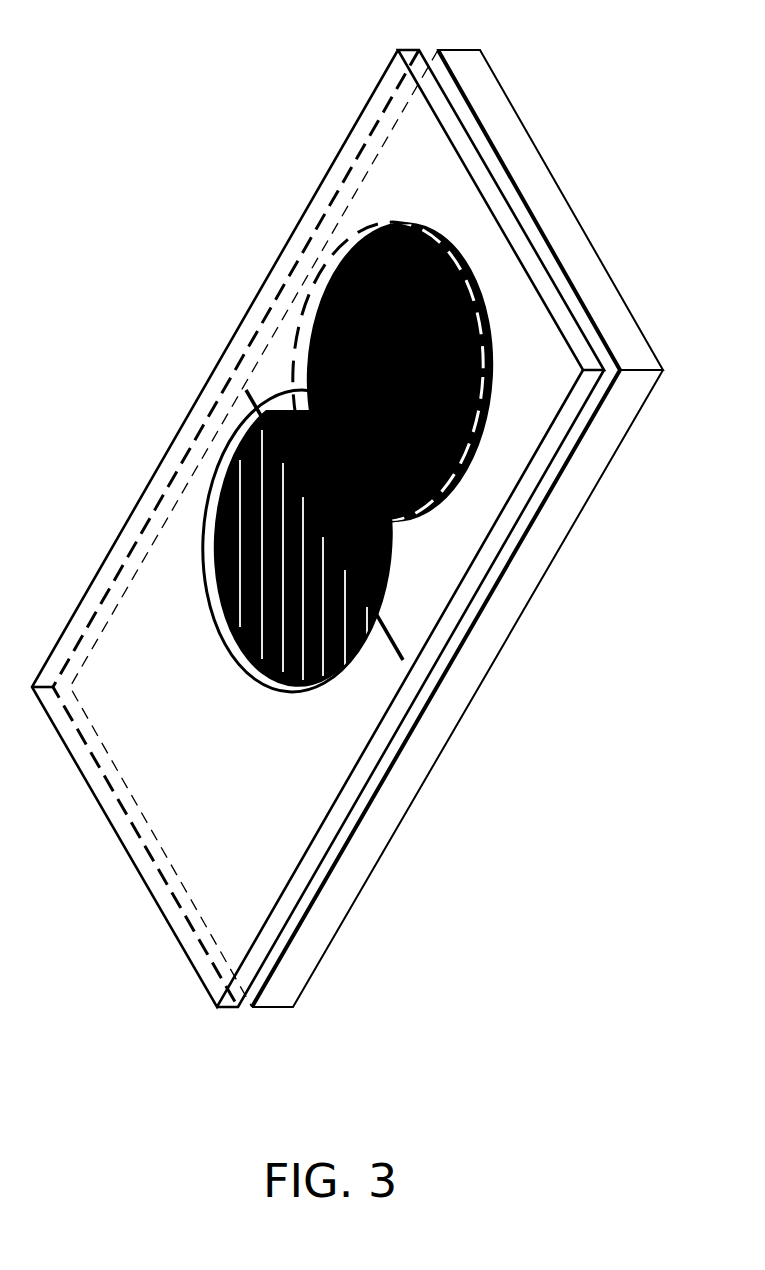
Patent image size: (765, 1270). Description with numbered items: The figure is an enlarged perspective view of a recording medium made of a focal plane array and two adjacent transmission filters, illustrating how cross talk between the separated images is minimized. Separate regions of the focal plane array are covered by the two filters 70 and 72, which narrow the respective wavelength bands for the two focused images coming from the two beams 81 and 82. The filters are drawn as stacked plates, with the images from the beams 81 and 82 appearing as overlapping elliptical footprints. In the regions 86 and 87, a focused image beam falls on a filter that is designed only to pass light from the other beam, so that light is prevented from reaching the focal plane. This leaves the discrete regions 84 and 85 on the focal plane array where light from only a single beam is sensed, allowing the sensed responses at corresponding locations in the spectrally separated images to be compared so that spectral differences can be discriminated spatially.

The filter 70 is at (380, 82).
The filter 72 is at (138, 507).
The beam 81 is at (292, 358).
The beam 82 is at (365, 630).
The discrete region 84 is at (370, 287).
The discrete region 85 is at (253, 495).
The region 86 is at (303, 413).
The region 87 is at (370, 553).